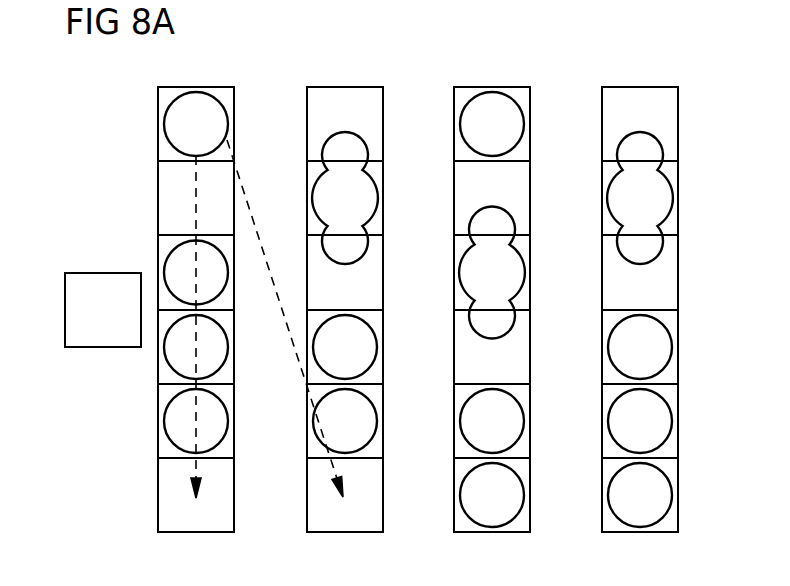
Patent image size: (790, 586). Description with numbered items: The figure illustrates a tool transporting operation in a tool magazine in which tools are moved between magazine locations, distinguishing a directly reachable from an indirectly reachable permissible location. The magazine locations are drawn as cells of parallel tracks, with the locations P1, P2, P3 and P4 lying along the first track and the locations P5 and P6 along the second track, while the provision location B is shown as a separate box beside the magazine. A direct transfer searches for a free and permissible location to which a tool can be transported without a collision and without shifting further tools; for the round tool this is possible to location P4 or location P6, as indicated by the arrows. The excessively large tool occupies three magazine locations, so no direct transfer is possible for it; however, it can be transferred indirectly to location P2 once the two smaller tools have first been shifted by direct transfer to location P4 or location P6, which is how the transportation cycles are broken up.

The magazine location P1 is at (158, 101).
The magazine location P2 is at (158, 176).
The magazine location P3 is at (158, 253).
The magazine location P4 is at (158, 475).
The magazine location P5 is at (307, 178).
The magazine location P6 is at (307, 477).
The provision location B is at (88, 273).